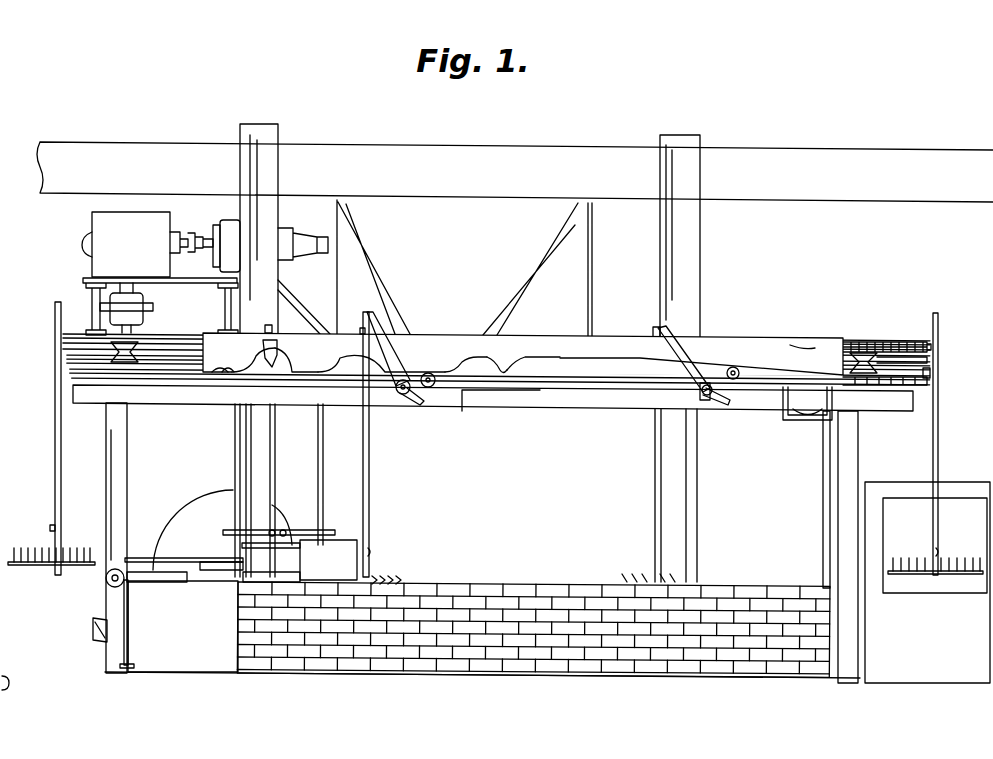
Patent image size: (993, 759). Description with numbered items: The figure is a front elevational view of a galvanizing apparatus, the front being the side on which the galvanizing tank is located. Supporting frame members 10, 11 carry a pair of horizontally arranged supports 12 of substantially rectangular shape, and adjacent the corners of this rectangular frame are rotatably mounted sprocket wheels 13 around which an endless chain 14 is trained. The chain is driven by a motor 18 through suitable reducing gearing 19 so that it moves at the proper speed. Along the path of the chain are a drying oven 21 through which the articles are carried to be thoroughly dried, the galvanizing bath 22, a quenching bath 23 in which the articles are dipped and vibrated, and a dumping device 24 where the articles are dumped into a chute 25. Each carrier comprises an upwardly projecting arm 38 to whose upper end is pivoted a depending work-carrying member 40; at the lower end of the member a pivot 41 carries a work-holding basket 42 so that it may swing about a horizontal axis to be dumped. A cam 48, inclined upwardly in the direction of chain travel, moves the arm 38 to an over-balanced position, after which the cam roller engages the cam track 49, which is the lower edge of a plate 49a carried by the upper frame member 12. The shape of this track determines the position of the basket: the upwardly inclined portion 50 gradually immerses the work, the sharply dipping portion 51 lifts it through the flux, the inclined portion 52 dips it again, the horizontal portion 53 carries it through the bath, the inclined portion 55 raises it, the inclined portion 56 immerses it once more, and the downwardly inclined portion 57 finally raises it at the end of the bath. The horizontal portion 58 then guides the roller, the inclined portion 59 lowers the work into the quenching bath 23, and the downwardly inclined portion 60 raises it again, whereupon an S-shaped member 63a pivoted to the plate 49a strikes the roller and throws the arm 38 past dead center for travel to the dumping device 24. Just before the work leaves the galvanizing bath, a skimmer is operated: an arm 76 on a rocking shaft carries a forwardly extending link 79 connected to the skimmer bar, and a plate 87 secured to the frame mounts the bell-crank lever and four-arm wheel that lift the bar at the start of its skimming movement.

The supporting frame member 10 is at (266, 172).
The supporting frame member 11 is at (110, 487).
The horizontally arranged support 12 is at (888, 345).
The sprocket wheel 13 is at (862, 350).
The endless chain 14 is at (930, 370).
The motor 18 is at (220, 230).
The reducing gearing 19 is at (103, 226).
The drying oven 21 is at (952, 492).
The galvanizing bath 22 is at (730, 586).
The quenching bath 23 is at (185, 624).
The dumping device 24 is at (208, 505).
The chute 25 is at (92, 634).
The upwardly projecting arm 38 is at (58, 332).
The work-carrying member 40 is at (60, 462).
The pivot 41 is at (372, 553).
The work-holding basket 42 is at (40, 560).
The cam 48 is at (805, 415).
The cam track 49 is at (820, 348).
The plate 49a is at (803, 345).
The upwardly inclined track portion 50 is at (610, 352).
The downwardly dipping track portion 51 is at (525, 352).
The upwardly inclined track portion 52 is at (492, 358).
The horizontal track portion 53 is at (466, 350).
The inclined track portion 55 is at (452, 392).
The upwardly inclined track portion 56 is at (413, 350).
The downwardly inclined track portion 57 is at (350, 374).
The horizontal track portion 58 is at (303, 374).
The inclined track portion 59 is at (276, 360).
The downwardly inclined track portion 60 is at (258, 352).
The S-shaped member 63a is at (228, 375).
The arm 76 is at (128, 646).
The link 79 is at (190, 560).
The plate 87 is at (358, 556).